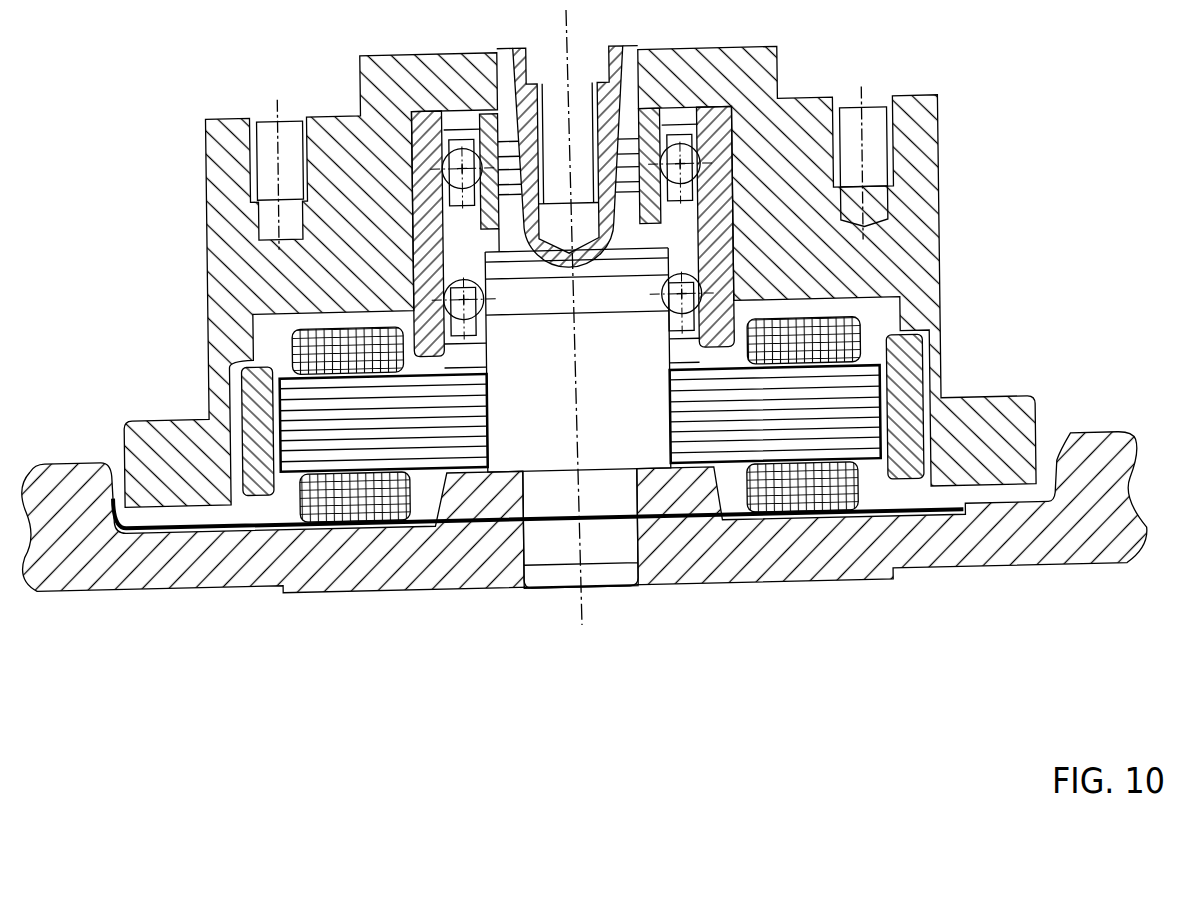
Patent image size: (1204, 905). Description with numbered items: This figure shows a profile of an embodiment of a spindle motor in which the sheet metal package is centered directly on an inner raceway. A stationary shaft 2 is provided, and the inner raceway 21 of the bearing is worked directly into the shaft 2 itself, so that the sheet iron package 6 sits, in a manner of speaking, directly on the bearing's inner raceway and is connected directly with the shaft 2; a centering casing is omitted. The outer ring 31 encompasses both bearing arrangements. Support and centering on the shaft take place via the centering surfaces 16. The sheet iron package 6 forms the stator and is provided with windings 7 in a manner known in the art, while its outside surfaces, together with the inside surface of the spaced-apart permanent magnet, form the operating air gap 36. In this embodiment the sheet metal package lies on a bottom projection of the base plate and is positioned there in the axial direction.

The outer ring 31 is at (737, 231).
The windings 7 is at (850, 309).
The sheet iron package 6 is at (827, 400).
The operating air gap 36 is at (887, 433).
The centering surfaces 16 is at (489, 422).
The inner raceway 21 is at (603, 533).
The shaft 2 is at (607, 609).